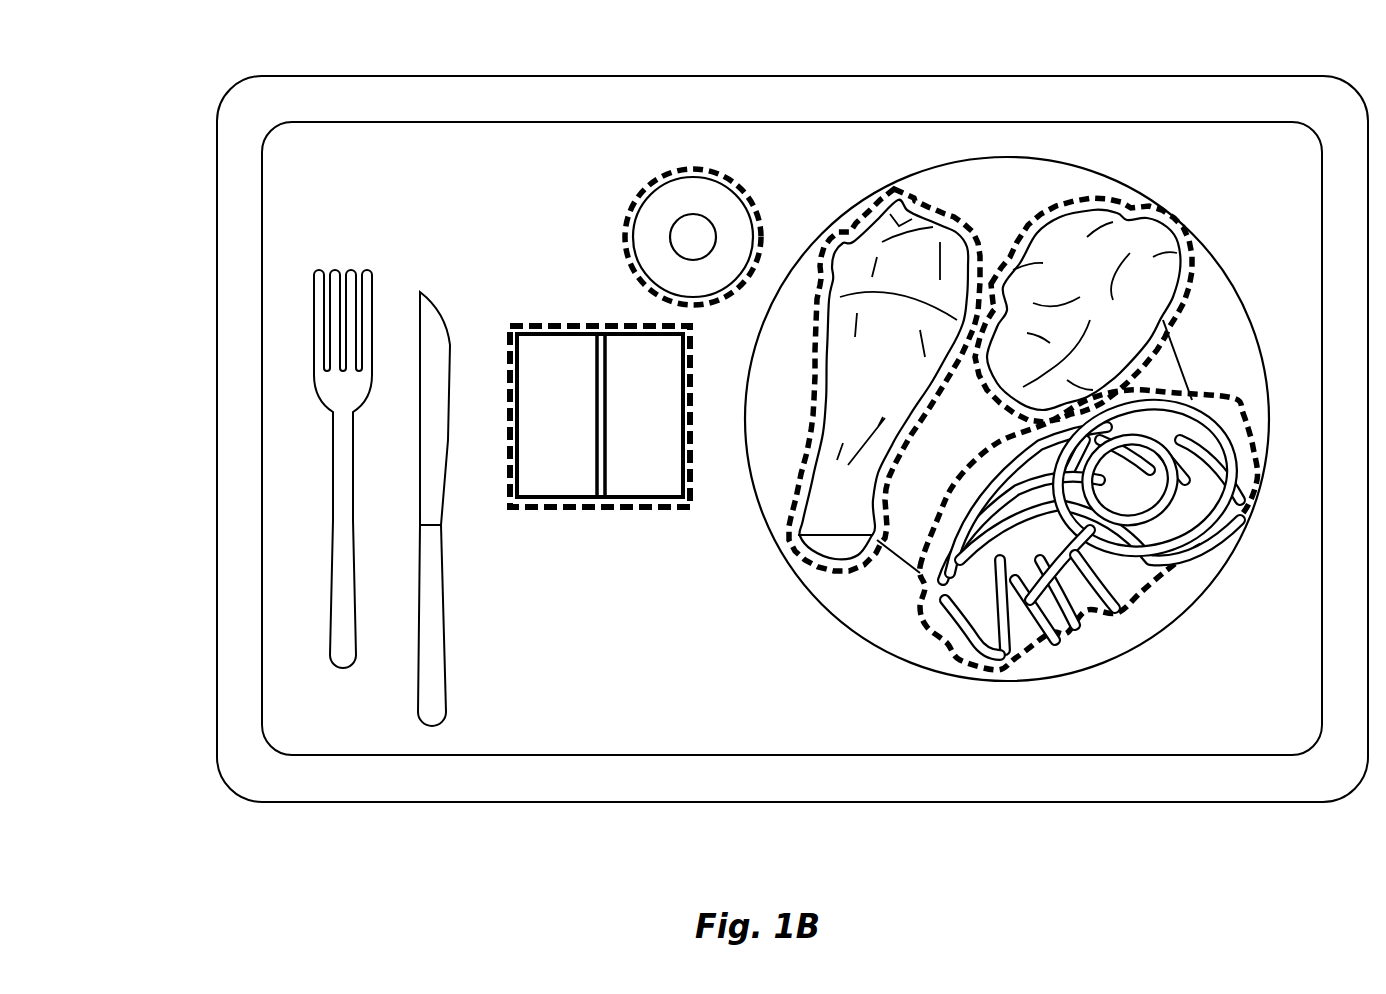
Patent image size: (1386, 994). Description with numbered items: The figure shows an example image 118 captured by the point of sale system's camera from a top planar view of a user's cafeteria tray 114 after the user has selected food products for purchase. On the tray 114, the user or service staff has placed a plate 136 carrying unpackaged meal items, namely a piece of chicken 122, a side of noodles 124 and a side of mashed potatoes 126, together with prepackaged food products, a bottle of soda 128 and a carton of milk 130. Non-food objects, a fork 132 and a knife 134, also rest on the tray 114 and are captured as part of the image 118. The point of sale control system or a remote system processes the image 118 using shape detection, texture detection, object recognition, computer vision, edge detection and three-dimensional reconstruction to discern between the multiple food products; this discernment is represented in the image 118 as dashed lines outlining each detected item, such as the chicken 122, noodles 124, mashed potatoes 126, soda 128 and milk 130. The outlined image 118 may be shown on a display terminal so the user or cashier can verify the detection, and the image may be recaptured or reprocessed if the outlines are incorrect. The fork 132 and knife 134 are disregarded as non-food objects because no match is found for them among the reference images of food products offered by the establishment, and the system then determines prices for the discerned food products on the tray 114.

The cafeteria tray 114 is at (565, 697).
The image 118 is at (196, 45).
The piece of chicken 122 is at (822, 482).
The side of noodles 124 is at (923, 603).
The side of mashed potatoes 126 is at (1180, 253).
The bottle of soda 128 is at (655, 222).
The carton of milk 130 is at (573, 473).
The fork 132 is at (340, 522).
The knife 134 is at (435, 655).
The plate 136 is at (830, 585).